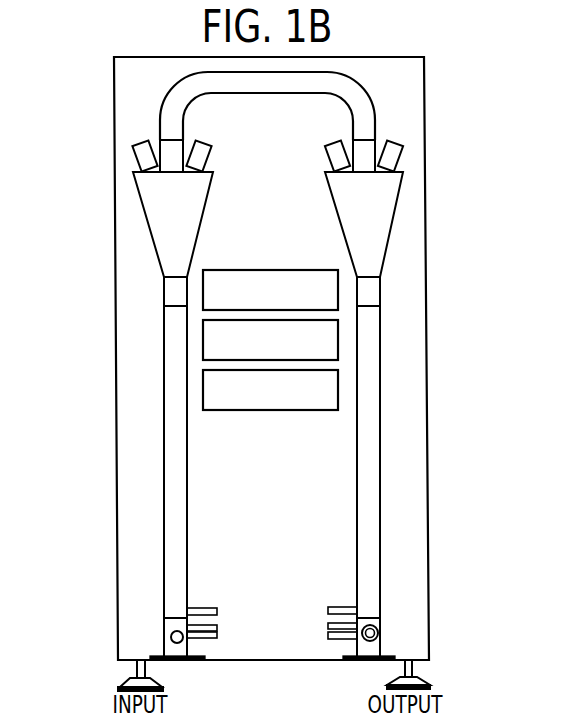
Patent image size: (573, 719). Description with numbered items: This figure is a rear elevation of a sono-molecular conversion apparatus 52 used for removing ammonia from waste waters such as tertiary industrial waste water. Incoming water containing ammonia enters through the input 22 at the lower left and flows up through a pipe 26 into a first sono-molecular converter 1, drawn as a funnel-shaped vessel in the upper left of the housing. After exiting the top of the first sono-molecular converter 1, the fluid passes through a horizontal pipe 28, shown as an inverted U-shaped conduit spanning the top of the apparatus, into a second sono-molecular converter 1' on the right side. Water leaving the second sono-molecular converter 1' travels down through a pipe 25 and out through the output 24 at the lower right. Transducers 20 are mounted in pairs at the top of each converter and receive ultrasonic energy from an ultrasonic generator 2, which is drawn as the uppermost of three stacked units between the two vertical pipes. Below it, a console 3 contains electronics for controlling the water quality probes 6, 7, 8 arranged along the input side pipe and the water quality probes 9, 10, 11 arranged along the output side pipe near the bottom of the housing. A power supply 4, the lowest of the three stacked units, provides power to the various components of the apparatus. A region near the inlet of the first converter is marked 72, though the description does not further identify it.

The sono-molecular conversion apparatus 52 is at (101, 365).
The horizontal pipe 28 is at (269, 88).
The inlet neck 72 is at (165, 148).
The first sono-molecular converter 1 is at (173, 224).
The second sono-molecular converter 1' is at (364, 208).
The transducers 20 is at (138, 157).
The ultrasonic generator 2 is at (270, 290).
The console 3 is at (270, 340).
The power supply 4 is at (270, 390).
The pipe 26 is at (180, 489).
The pipe 25 is at (364, 490).
The water quality probe 6 is at (212, 607).
The water quality probe 7 is at (212, 628).
The water quality probe 8 is at (212, 647).
The water quality probe 9 is at (332, 605).
The water quality probe 10 is at (326, 627).
The water quality probe 11 is at (326, 646).
The input 22 is at (177, 637).
The output 24 is at (372, 631).